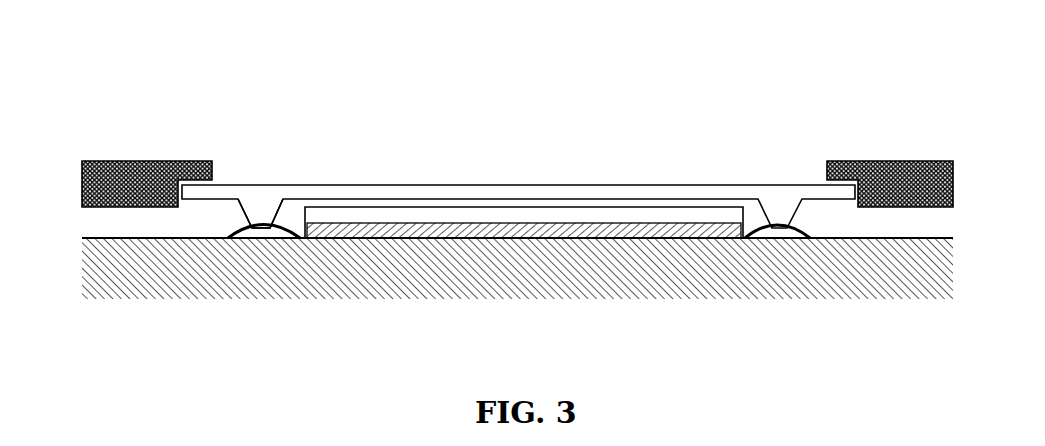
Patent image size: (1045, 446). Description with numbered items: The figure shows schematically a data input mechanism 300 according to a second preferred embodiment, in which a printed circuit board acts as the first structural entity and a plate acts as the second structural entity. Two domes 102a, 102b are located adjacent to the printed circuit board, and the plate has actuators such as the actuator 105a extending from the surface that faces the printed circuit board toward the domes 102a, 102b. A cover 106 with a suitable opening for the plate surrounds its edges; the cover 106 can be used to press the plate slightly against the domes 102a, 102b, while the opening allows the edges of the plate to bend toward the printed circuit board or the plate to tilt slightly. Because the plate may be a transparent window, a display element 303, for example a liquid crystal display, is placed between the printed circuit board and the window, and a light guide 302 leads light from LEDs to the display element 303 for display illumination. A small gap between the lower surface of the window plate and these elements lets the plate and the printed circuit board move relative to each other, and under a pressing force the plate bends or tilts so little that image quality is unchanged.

The data input mechanism 300 is at (308, 73).
The cover 106 is at (163, 162).
The light guide 302 is at (348, 212).
The actuator 105a is at (250, 218).
The dome 102a is at (278, 232).
The dome 102b is at (787, 235).
The display element 303 is at (452, 233).